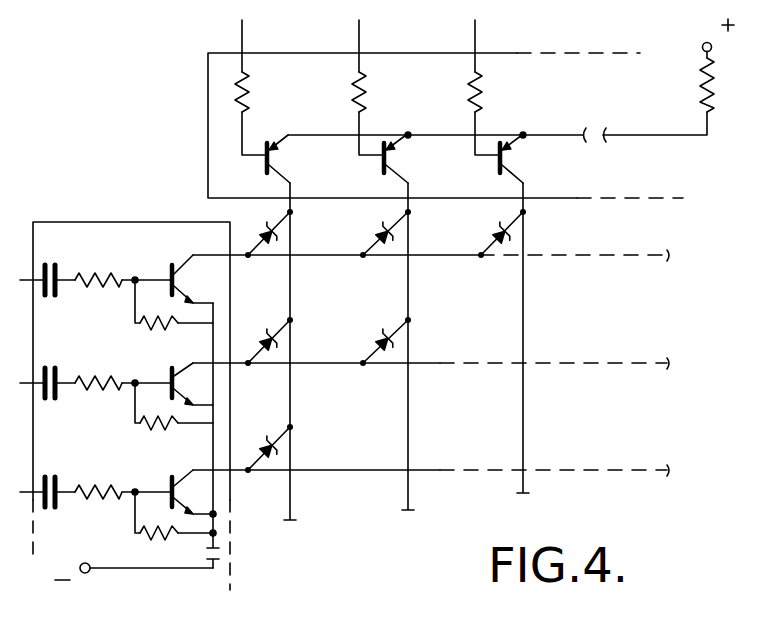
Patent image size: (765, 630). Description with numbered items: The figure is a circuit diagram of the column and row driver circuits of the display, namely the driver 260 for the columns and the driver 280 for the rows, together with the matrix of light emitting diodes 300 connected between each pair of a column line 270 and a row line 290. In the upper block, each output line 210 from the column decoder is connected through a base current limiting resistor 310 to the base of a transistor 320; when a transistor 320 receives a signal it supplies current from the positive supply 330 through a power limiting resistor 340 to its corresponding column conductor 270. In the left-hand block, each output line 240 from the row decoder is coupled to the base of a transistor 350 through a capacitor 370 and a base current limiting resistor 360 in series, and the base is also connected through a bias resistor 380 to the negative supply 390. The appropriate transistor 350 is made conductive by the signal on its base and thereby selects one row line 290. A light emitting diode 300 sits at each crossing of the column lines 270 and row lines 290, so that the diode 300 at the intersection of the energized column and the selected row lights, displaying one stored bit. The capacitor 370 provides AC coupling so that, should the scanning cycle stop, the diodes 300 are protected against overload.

The output of the column decoder 210 is at (488, 30).
The output of the row decoder 240 is at (34, 280).
The driver 260 is at (208, 118).
The line 270 is at (291, 277).
The driver 280 is at (86, 222).
The line 290 is at (330, 262).
The light emitting diode 300 is at (266, 212).
The base current limiting resistor 310 is at (250, 90).
The transistor 320 is at (530, 159).
The supply 330 is at (704, 42).
The power limiting resistor 340 is at (700, 82).
The transistor 350 is at (176, 277).
The base current limiting resistor 360 is at (97, 290).
The capacitor 370 is at (50, 297).
The bias resistor 380 is at (170, 330).
The negative supply 390 is at (88, 573).